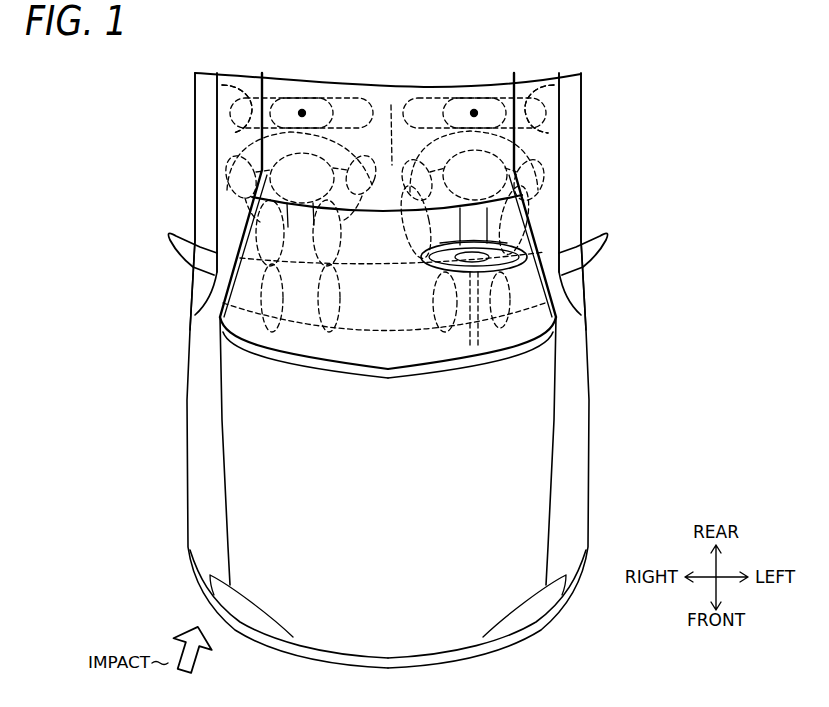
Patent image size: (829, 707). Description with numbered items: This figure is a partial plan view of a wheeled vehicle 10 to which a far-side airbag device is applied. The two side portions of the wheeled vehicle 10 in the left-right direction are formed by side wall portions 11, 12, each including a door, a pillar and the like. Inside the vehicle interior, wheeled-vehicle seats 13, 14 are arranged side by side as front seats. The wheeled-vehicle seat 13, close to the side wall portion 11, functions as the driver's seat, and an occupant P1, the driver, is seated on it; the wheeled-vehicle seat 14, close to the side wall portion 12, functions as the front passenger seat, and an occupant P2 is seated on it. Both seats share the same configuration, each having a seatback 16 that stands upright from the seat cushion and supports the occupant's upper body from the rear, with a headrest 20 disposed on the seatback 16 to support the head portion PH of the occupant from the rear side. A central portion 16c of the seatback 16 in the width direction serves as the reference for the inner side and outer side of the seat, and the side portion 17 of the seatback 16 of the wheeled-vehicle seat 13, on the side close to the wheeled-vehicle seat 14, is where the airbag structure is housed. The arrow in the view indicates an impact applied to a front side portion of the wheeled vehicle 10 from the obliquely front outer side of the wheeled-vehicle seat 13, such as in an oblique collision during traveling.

The wheeled vehicle 10 is at (392, 669).
The side wall portion 11 is at (584, 169).
The side wall portion 12 is at (198, 169).
The wheeled-vehicle seat 13 is at (548, 85).
The wheeled-vehicle seat 14 is at (222, 85).
The seatback 16 is at (197, 88).
The central portion 16c is at (302, 113).
The side portion 17 is at (384, 218).
The headrest 20 is at (232, 113).
The occupant P1 is at (556, 186).
The occupant P2 is at (228, 183).
The head portion PH is at (417, 232).